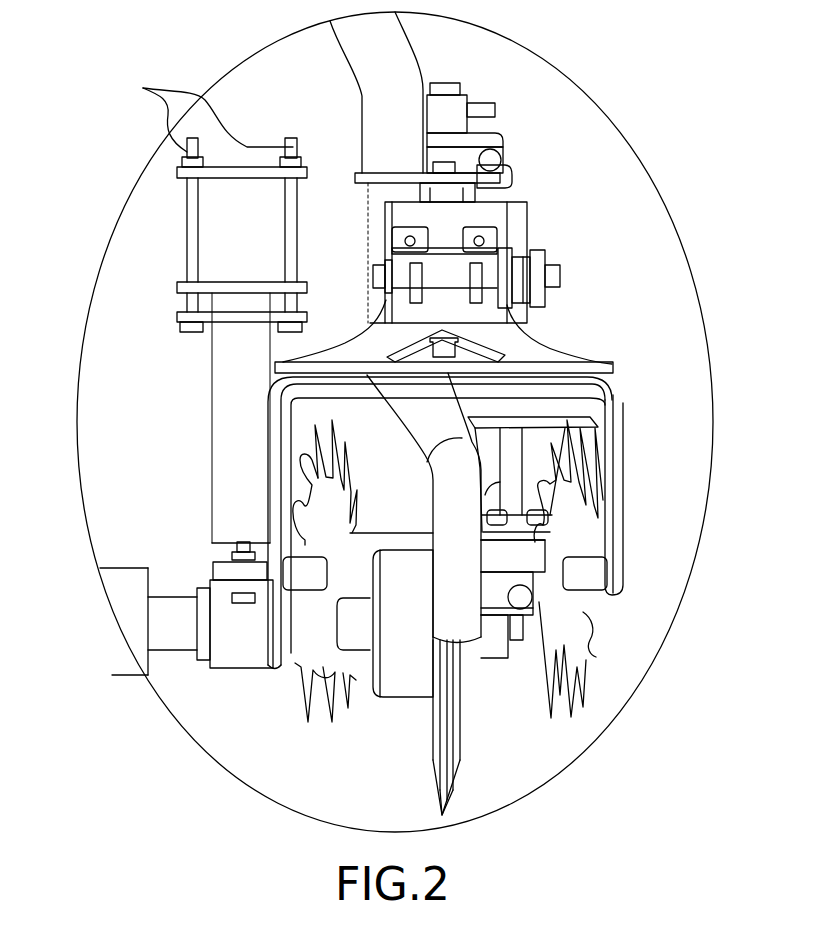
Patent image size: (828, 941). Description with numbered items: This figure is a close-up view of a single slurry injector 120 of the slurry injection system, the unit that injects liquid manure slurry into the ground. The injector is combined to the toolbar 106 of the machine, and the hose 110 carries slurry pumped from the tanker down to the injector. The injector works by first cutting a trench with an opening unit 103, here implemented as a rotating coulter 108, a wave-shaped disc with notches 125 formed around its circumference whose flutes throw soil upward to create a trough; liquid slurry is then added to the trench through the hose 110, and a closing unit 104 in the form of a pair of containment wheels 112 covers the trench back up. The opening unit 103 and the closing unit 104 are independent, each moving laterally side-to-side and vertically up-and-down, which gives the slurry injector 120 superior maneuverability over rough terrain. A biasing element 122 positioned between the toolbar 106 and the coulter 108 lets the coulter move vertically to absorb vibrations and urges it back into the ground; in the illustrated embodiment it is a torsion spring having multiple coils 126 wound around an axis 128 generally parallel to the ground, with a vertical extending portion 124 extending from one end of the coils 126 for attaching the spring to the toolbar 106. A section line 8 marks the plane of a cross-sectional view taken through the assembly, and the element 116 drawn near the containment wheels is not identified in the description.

The section line 8- 8 is at (95, 282).
The opening unit 103 is at (380, 730).
The closing unit 104 is at (567, 752).
The toolbar 106 is at (128, 255).
The rotating coulter 108 is at (435, 747).
The hose 110 is at (393, 53).
The containment wheels 112 is at (313, 673).
The motor 116 is at (183, 597).
The slurry injector 120 is at (113, 568).
The biasing element 122 is at (233, 370).
The vertical extending portion 124 is at (460, 663).
The notch 125 is at (196, 112).
The multiple coils 126 is at (453, 740).
The axis 128 is at (437, 783).